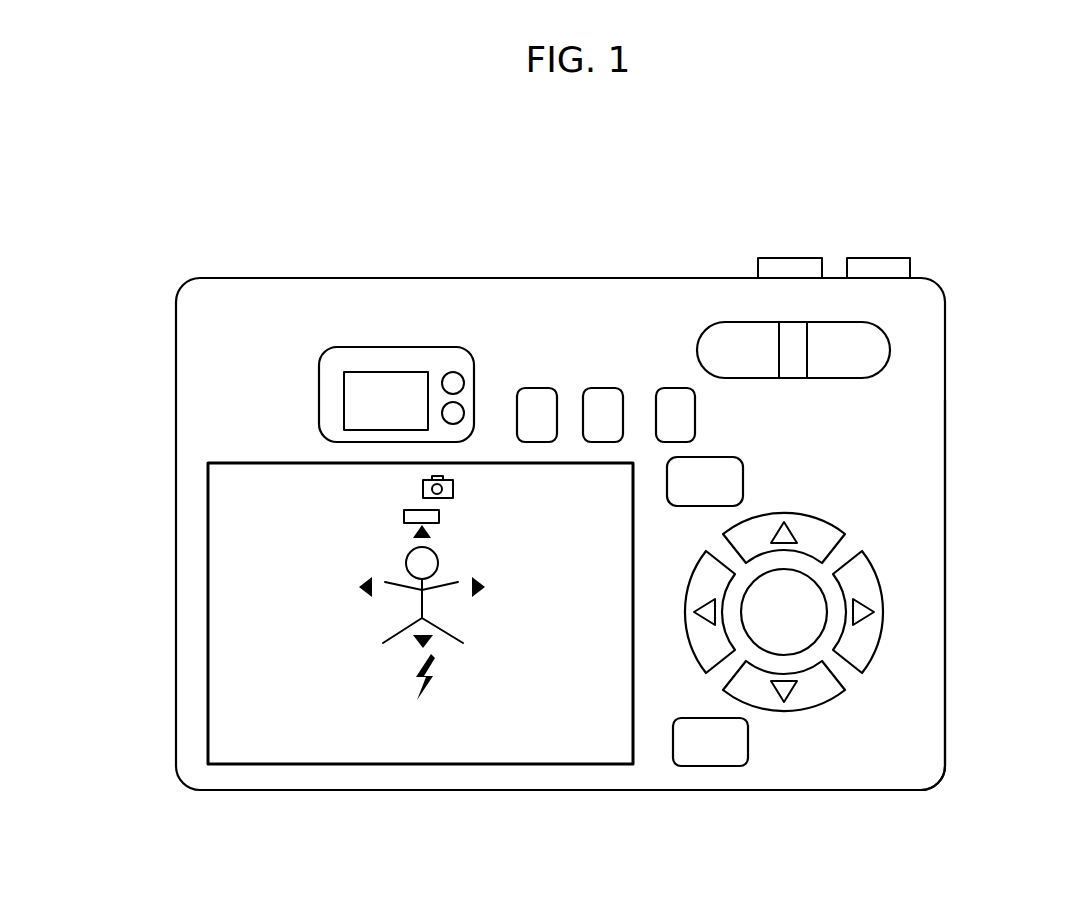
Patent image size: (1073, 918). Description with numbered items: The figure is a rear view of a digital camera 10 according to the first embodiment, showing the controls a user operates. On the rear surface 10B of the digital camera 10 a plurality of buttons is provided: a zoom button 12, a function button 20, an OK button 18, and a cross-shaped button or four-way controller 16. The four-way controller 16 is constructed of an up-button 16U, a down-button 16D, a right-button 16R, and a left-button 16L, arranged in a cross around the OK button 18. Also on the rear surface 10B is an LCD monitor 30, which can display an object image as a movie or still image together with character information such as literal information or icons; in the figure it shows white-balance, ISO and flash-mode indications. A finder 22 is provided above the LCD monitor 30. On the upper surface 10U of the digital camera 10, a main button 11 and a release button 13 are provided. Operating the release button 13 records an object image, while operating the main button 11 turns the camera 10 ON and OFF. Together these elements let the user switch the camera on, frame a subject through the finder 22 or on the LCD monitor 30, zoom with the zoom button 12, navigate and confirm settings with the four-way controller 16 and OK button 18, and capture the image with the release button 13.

The digital camera 10 is at (963, 286).
The upper surface 10U is at (515, 278).
The rear surface 10B is at (917, 703).
The main button 11 is at (879, 258).
The release button 13 is at (790, 258).
The zoom button 12 is at (890, 347).
The finder 22 is at (388, 372).
The LCD monitor 30 is at (427, 764).
The four-way controller 16 is at (835, 703).
The up-button 16U is at (818, 516).
The right-button 16R is at (873, 569).
The down-button 16D is at (812, 708).
The left-button 16L is at (693, 650).
The OK button 18 is at (805, 632).
The function button 20 is at (708, 766).